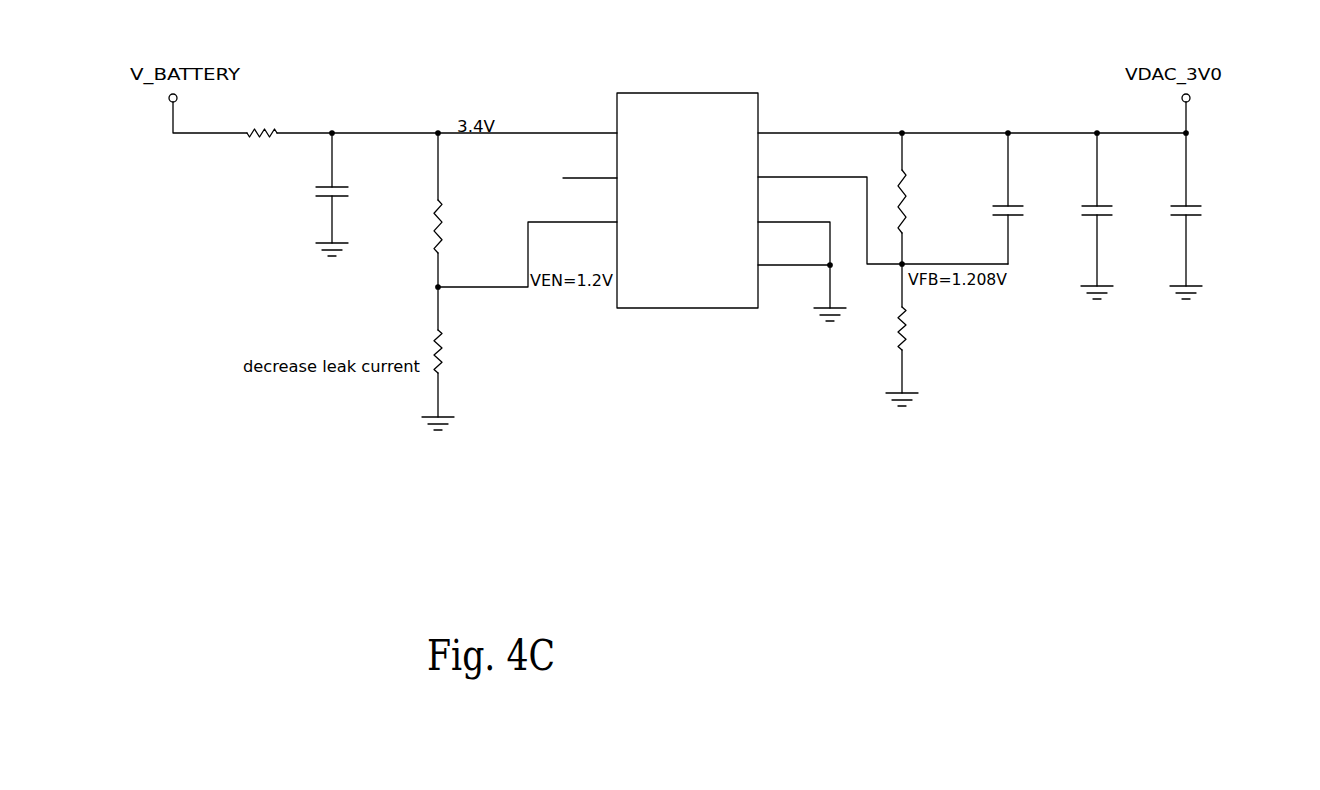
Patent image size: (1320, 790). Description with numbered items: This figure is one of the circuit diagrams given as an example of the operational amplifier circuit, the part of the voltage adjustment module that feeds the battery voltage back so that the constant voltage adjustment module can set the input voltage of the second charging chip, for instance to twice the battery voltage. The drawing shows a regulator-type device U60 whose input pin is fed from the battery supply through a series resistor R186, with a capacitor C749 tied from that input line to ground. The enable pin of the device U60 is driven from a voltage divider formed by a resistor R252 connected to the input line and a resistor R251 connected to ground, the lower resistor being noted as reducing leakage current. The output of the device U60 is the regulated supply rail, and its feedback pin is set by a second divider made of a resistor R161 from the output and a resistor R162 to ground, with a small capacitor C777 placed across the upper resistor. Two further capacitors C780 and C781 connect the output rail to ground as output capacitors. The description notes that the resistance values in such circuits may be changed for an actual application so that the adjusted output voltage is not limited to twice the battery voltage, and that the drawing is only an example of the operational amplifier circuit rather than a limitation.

The input series resistor 0R/5% R0402 R186 is at (292, 125).
The input capacitor 0.1uF/50V C0402 C749 is at (369, 194).
The enable divider resistor 1.5M/1% R0402 R252 is at (475, 210).
The enable divider resistor 820K/1% R0402 R251 is at (470, 358).
The LDO regulator TPS73401DRVR U60 is at (680, 211).
The feedback resistor 178K/1% R0402 R161 is at (939, 198).
The feedback resistor 120K/1% R0402 R162 is at (933, 335).
The feedforward capacitor 4.7pF/50V C0402 C777 is at (1035, 198).
The output capacitor 10uF/10V C0402 C780 is at (1121, 216).
The output capacitor 0.1uF/50V C0402 C781 is at (1221, 216).